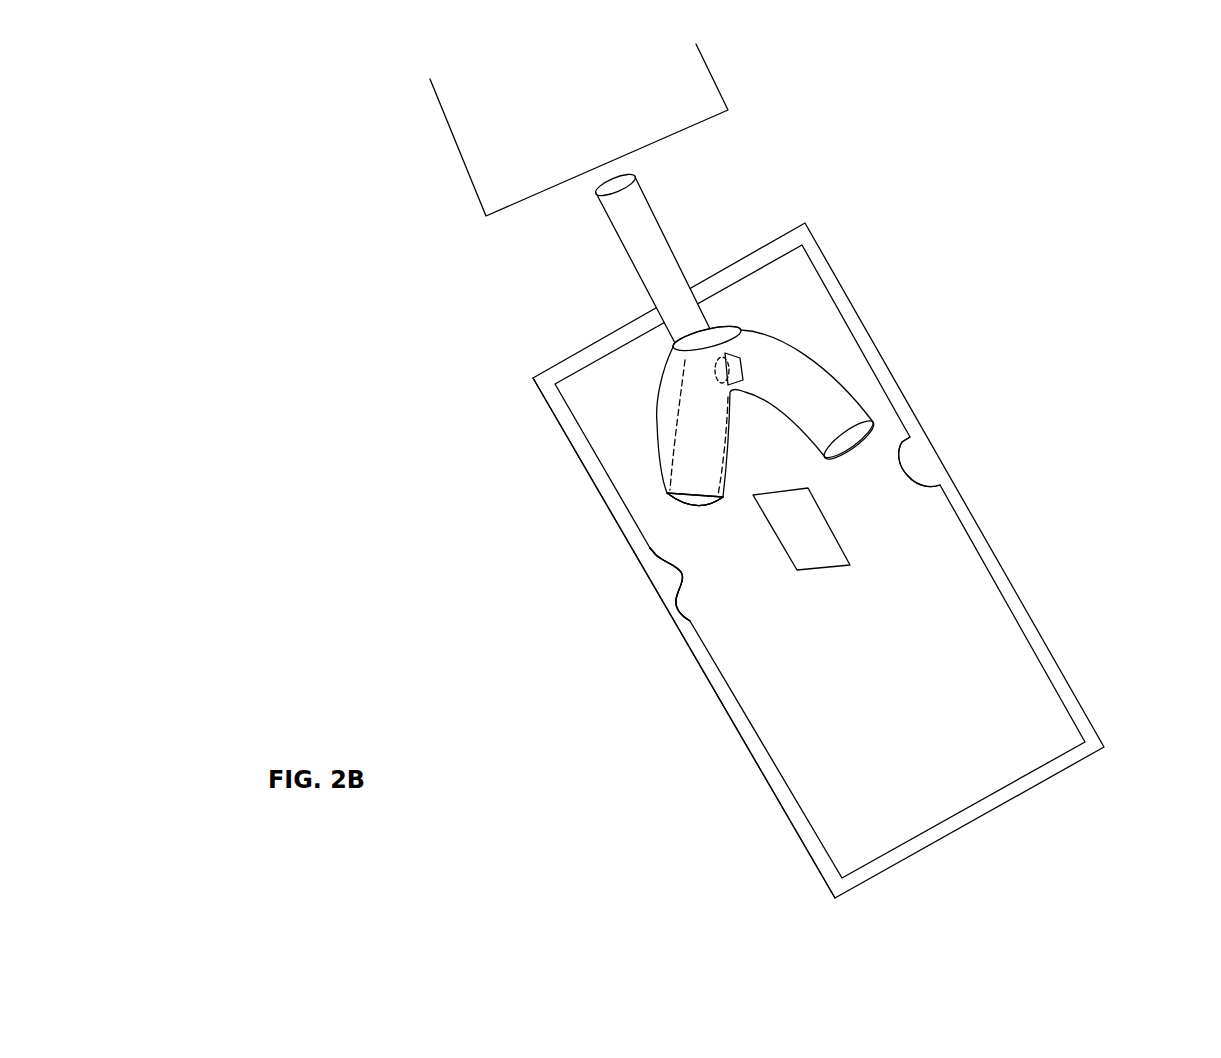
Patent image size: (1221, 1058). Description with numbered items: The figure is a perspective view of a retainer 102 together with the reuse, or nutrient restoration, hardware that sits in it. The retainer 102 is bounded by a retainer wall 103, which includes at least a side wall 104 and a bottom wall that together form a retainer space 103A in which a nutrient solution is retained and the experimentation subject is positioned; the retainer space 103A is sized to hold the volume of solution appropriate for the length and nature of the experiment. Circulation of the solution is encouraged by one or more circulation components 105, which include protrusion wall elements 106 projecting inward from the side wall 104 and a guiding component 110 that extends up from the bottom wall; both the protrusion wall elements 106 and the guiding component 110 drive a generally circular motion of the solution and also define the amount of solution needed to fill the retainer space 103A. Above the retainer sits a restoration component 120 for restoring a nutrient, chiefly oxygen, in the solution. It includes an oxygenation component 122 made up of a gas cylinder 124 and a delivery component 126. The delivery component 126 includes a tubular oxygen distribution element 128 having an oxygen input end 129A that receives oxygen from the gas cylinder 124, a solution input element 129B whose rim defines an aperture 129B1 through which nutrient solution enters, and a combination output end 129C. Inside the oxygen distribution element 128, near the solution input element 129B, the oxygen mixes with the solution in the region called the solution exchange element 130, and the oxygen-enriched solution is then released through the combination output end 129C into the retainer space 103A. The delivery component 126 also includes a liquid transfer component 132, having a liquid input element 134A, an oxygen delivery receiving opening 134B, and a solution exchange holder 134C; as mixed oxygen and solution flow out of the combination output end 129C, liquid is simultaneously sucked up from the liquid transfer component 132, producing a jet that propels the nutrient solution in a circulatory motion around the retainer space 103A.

The retainer 102 is at (1028, 310).
The retainer wall 103 is at (998, 558).
The retainer space 103A is at (960, 698).
The side wall 104 is at (743, 772).
The circulation component 105 is at (588, 605).
The protrusion wall element 106 is at (613, 318).
The guiding component 110 is at (802, 538).
The restoration component 120 is at (470, 247).
The oxygenation component 122 is at (479, 277).
The gas cylinder 124 is at (720, 78).
The delivery component 126 is at (695, 227).
The oxygen distribution element 128 is at (623, 245).
The oxygen input end 129A is at (638, 180).
The solution input element 129B is at (732, 367).
The aperture 129B1 is at (727, 353).
The combination output end 129C is at (688, 510).
The solution exchange element 130 is at (707, 390).
The liquid transfer component 132 is at (667, 387).
The liquid input element 134A is at (852, 435).
The oxygen delivery receiving opening 134B is at (533, 378).
The solution exchange holder 134C is at (667, 493).